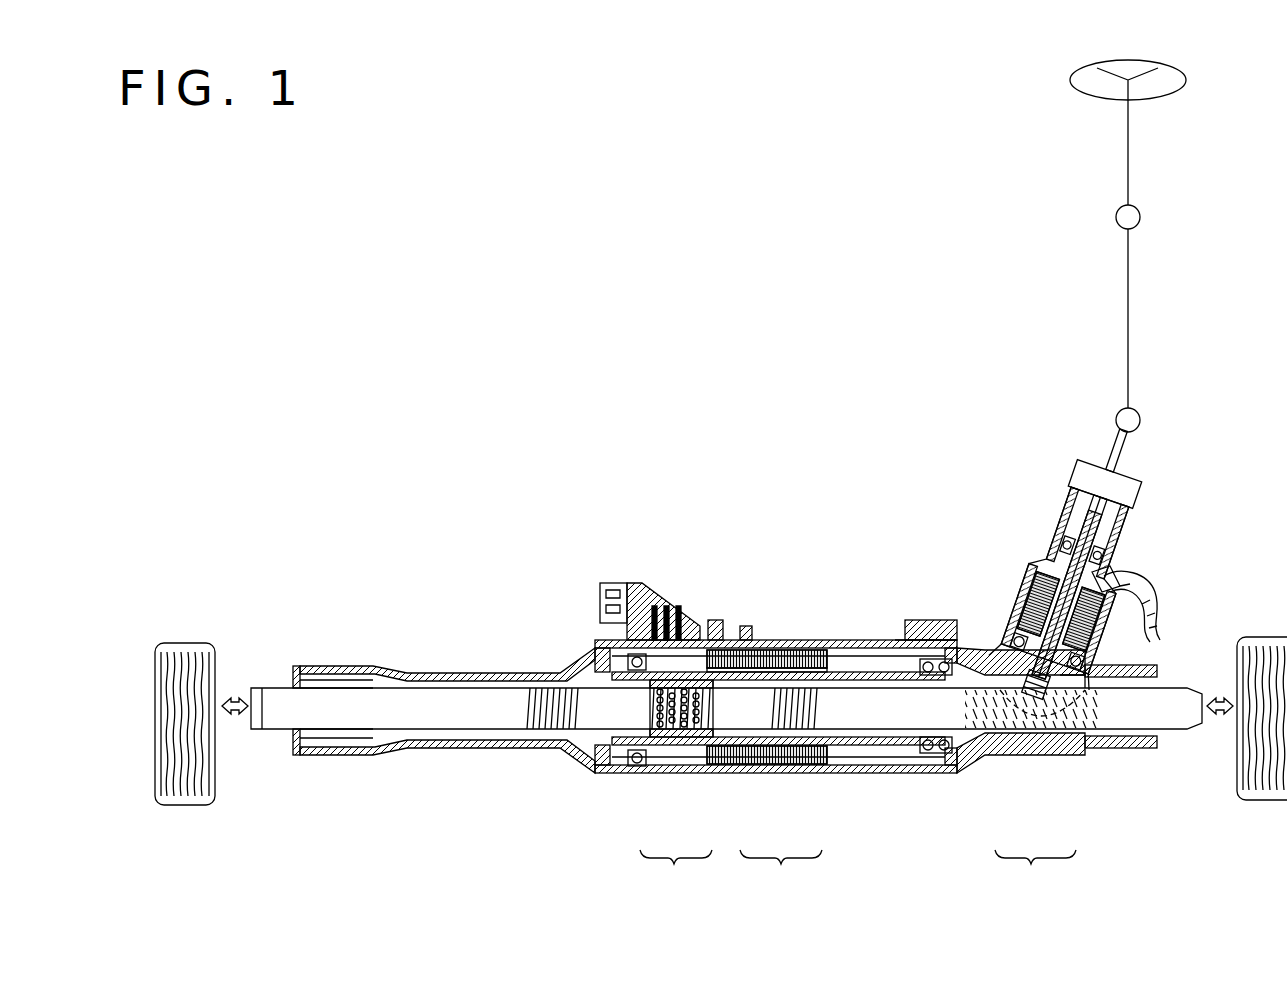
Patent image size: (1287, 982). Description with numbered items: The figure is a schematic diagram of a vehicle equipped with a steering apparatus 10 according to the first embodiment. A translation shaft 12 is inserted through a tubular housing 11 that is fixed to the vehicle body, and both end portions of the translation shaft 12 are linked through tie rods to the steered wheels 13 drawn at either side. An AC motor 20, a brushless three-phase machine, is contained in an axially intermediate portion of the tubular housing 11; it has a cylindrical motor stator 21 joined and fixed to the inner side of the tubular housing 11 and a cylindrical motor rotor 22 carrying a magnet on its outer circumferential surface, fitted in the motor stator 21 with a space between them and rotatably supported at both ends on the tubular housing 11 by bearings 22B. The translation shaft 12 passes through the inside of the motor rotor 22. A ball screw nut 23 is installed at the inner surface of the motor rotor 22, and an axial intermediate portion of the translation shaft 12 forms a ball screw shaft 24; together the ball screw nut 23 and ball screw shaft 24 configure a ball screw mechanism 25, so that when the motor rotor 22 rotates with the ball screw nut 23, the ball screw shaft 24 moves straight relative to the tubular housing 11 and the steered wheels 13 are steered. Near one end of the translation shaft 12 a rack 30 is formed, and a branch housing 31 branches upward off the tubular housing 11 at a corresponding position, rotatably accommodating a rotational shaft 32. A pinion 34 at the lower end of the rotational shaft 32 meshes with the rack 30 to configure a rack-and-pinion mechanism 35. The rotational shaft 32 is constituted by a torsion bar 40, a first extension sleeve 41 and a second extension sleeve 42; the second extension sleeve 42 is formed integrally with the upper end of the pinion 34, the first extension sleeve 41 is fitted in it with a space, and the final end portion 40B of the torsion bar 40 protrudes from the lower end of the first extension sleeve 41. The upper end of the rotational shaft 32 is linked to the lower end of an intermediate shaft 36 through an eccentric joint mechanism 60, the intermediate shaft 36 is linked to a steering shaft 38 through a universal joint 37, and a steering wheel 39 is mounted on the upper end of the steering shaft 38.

The steering apparatus 10 is at (518, 144).
The tubular housing 11 is at (462, 672).
The translation shaft 12 is at (277, 692).
The steered wheels 13 is at (191, 806).
The AC motor 20 is at (778, 769).
The motor stator 21 is at (807, 766).
The motor rotor 22 is at (752, 768).
The bearings 22B is at (632, 772).
The ball screw nut 23 is at (698, 757).
The ball screw shaft 24 is at (643, 712).
The ball screw mechanism 25 is at (676, 784).
The rack 30 is at (985, 750).
The branch housing 31 is at (1120, 545).
The rotational shaft 32 is at (990, 570).
The pinion 34 is at (1065, 745).
The rack-and-pinion mechanism 35 is at (1035, 779).
The intermediate shaft 36 is at (1118, 453).
The universal joint 37 is at (1133, 424).
The steering shaft 38 is at (1128, 148).
The steering wheel 39 is at (1072, 76).
The torsion bar 40 is at (1035, 590).
The final end portion 40B is at (1087, 690).
The first extension sleeve 41 is at (1085, 520).
The second extension sleeve 42 is at (1013, 648).
The eccentric joint mechanism 60 is at (1147, 481).